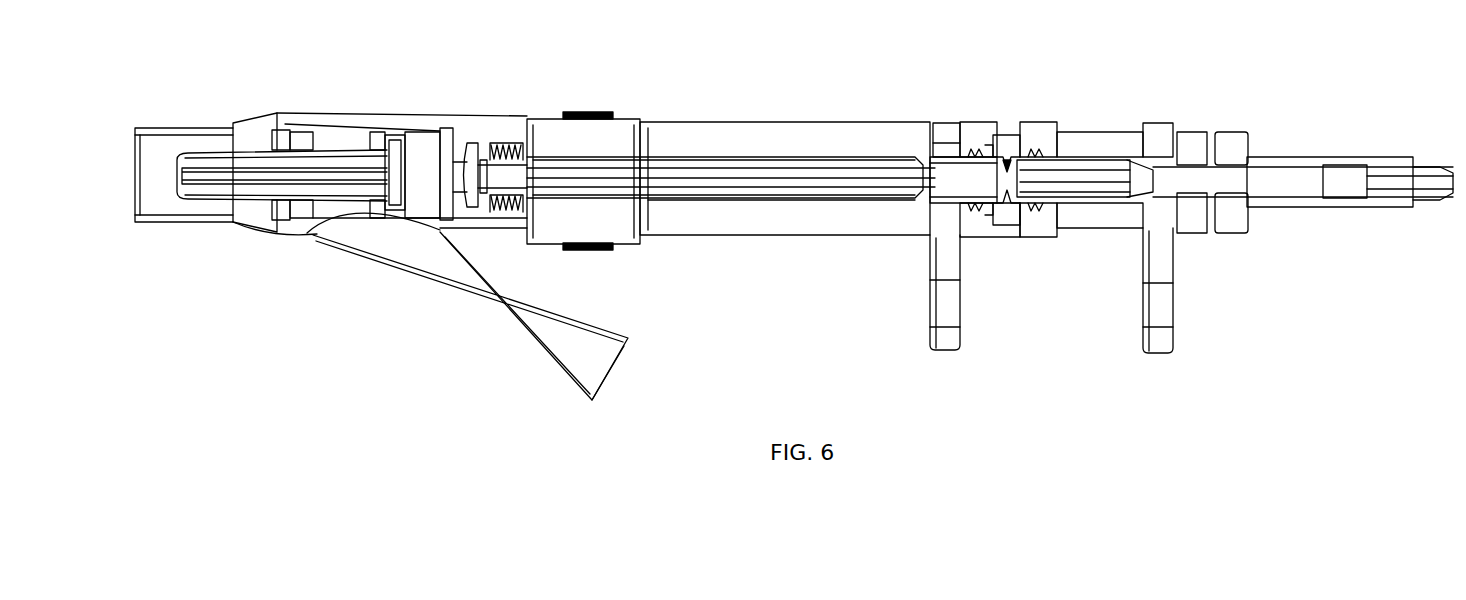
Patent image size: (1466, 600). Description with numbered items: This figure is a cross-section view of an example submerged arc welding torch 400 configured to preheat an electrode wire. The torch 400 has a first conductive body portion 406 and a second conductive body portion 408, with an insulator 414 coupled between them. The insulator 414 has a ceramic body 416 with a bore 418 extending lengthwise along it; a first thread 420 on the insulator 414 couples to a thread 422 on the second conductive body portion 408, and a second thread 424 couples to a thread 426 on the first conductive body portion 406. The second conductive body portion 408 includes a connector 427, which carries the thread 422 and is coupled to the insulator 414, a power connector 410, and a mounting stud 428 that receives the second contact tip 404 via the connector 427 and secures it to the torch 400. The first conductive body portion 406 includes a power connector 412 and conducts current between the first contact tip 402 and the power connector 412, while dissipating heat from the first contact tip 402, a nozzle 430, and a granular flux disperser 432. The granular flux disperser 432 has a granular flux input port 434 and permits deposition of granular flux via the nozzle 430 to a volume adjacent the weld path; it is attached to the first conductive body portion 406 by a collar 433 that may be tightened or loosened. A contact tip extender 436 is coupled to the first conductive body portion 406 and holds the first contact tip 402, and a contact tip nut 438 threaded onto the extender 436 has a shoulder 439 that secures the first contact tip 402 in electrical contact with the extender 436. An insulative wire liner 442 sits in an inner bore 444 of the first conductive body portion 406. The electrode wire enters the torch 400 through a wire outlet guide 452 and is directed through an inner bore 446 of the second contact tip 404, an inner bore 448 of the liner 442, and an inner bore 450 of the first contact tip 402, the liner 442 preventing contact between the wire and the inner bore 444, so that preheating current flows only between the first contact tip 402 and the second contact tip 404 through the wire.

The SAW torch 400 is at (218, 55).
The first contact tip 402 is at (202, 160).
The second contact tip 404 is at (1047, 187).
The first conductive body portion 406 is at (610, 143).
The second conductive body portion 408 is at (1258, 79).
The power connector 410 is at (1147, 352).
The power connector 412 is at (932, 342).
The insulator 414 is at (993, 125).
The ceramic body 416 is at (990, 130).
The bore 418 is at (1008, 160).
The first thread 420 is at (1030, 147).
The thread 422 is at (1040, 148).
The second thread 424 is at (970, 210).
The thread 426 is at (977, 148).
The connector 427 is at (1102, 143).
The mounting stud 428 is at (1230, 138).
The nozzle 430 is at (157, 218).
The granular flux disperser 432 is at (277, 115).
The collar 433 is at (580, 110).
The granular flux input port 434 is at (597, 358).
The contact tip extender 436 is at (465, 142).
The contact tip nut 438 is at (403, 130).
The shoulder 439 is at (377, 142).
The insulative wire liner 442 is at (807, 163).
The inner bore 444 is at (690, 197).
The inner bore 446 is at (1067, 178).
The inner bore 448 is at (750, 180).
The inner bore 450 is at (238, 173).
The wire outlet guide 452 is at (1380, 190).